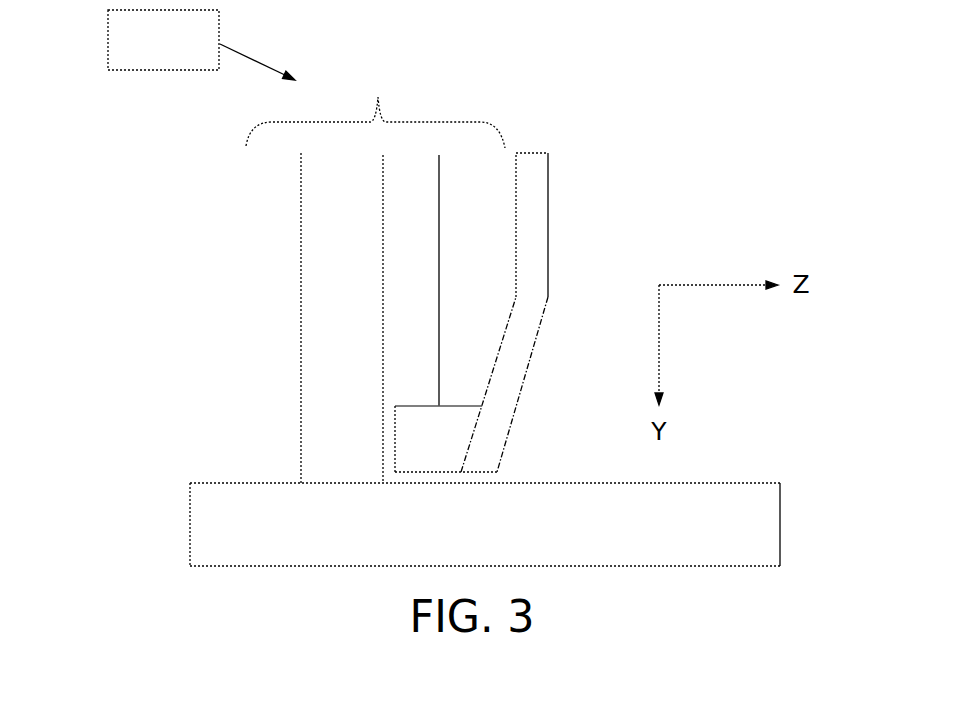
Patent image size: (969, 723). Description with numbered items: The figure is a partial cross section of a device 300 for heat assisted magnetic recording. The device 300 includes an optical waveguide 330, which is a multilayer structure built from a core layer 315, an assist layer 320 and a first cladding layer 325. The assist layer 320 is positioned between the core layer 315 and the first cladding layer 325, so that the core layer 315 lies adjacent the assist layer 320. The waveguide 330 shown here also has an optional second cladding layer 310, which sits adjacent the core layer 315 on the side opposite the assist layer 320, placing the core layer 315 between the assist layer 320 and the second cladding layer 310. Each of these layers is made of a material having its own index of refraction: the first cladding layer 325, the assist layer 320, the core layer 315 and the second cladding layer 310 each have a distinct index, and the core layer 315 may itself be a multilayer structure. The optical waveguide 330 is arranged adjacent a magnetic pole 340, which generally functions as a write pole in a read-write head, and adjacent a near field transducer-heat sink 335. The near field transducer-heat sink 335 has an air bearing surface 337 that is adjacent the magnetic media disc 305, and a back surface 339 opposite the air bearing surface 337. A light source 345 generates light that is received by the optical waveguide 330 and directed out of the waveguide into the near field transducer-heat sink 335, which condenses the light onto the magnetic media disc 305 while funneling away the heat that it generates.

The device 300 is at (98, 317).
The magnetic media disc 305 is at (454, 533).
The second cladding layer 310 is at (239, 356).
The core layer 315 is at (324, 301).
The assist layer 320 is at (392, 263).
The first cladding layer 325 is at (452, 218).
The optical waveguide 330 is at (375, 105).
The near field transducer-heat sink 335 is at (415, 450).
The air bearing surface 337 is at (435, 488).
The back surface 339 is at (456, 396).
The magnetic pole 340 is at (538, 275).
The light source 345 is at (144, 51).